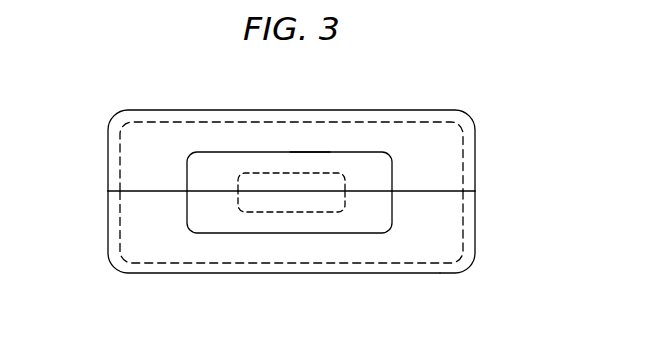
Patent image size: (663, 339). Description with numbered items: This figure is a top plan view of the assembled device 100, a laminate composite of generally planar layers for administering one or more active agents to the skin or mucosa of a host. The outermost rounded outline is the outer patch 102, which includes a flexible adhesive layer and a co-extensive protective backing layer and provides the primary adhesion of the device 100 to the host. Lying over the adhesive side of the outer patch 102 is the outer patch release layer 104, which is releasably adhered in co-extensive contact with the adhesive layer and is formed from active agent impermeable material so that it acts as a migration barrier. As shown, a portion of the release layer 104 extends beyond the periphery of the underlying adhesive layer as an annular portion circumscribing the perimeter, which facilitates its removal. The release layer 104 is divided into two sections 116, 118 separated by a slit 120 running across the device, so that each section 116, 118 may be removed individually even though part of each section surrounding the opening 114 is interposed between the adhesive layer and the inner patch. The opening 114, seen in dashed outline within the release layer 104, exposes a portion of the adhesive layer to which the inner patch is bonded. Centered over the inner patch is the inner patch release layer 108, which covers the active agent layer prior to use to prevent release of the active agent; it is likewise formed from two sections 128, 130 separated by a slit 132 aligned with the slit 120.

The device 100 is at (505, 160).
The outer patch 102 is at (418, 119).
The outer patch release layer 104 is at (462, 272).
The inner patch release layer 108 is at (311, 150).
The opening 114 is at (268, 172).
The section 116 is at (150, 244).
The section 118 is at (131, 172).
The slit 120 is at (131, 197).
The section 128 is at (212, 225).
The section 130 is at (218, 163).
The slit 132 is at (362, 192).